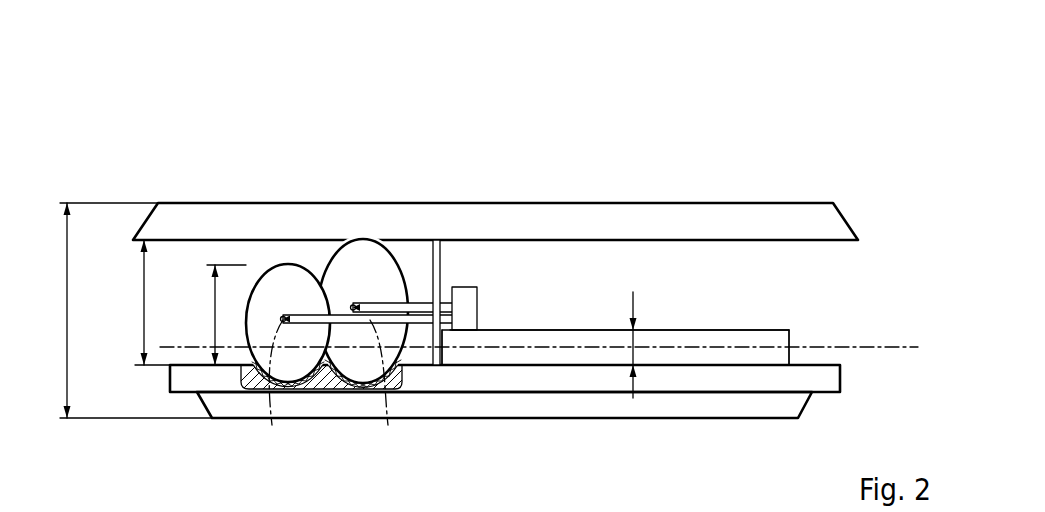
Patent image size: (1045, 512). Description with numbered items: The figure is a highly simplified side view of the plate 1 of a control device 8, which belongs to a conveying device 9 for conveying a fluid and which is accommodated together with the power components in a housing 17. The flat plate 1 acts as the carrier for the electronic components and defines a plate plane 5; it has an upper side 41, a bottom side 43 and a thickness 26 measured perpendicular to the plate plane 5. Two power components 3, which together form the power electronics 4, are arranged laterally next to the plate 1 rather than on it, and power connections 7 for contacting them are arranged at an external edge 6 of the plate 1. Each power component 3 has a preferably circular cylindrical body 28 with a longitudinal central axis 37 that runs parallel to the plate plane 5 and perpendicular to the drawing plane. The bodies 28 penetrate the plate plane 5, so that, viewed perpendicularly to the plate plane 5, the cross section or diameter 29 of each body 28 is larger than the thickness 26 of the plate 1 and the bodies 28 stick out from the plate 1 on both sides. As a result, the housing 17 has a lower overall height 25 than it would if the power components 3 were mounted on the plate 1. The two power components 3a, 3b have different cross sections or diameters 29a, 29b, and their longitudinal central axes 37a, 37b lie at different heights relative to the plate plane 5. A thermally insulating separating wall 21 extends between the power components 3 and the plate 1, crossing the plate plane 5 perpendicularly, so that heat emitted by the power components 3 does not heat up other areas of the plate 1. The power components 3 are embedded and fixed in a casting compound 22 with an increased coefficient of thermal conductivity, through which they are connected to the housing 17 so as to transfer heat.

The plate 1 is at (562, 326).
The power components 3 is at (327, 311).
The power component 3a is at (263, 308).
The power component 3b is at (337, 292).
The power electronics 4 is at (300, 246).
The plate plane 5 is at (873, 346).
The external edge 6 is at (775, 330).
The power connections 7 is at (465, 286).
The control device 8 is at (828, 297).
The conveying device 9 is at (863, 193).
The housing 17 is at (525, 218).
The separating wall 21 is at (432, 247).
The casting compound 22 is at (365, 386).
The overall height 25 is at (66, 312).
The thickness 26 is at (636, 345).
The body 28 is at (331, 247).
The diameter 29 is at (166, 302).
The diameter 29a is at (214, 320).
The diameter 29b is at (143, 310).
The longitudinal central axis 37 is at (356, 393).
The longitudinal central axis 37a is at (288, 393).
The longitudinal central axis 37b is at (415, 393).
The upper side 41 is at (727, 330).
The bottom side 43 is at (727, 367).